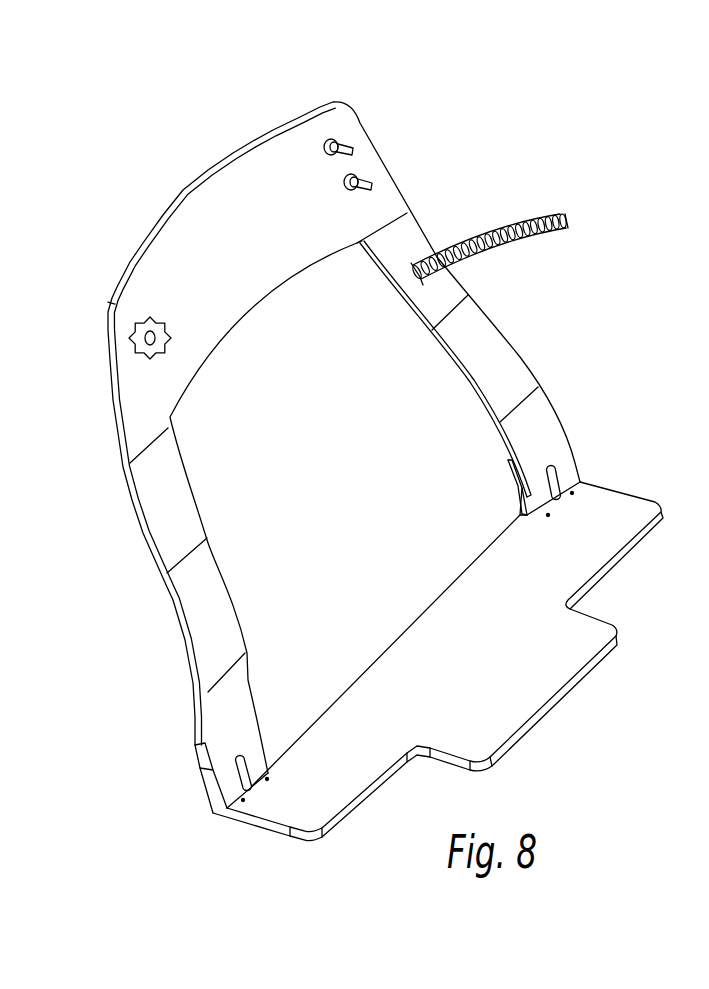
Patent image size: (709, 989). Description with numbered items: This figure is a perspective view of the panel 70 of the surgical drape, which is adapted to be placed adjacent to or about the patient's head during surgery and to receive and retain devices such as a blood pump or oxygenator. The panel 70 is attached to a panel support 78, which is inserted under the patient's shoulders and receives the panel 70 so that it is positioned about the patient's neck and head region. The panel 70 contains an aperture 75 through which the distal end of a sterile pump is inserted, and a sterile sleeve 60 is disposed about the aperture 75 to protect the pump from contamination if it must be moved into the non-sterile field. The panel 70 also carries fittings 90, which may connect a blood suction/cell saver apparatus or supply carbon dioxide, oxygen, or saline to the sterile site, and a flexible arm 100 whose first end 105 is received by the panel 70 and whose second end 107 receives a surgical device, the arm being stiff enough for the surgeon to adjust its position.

The sterile sleeve 60 is at (145, 352).
The panel 70 is at (353, 433).
The aperture 75 is at (148, 338).
The panel support 78 is at (545, 678).
The fittings 90 is at (354, 148).
The flexible arm 100 is at (527, 216).
The first end 105 is at (418, 282).
The second end 107 is at (566, 221).